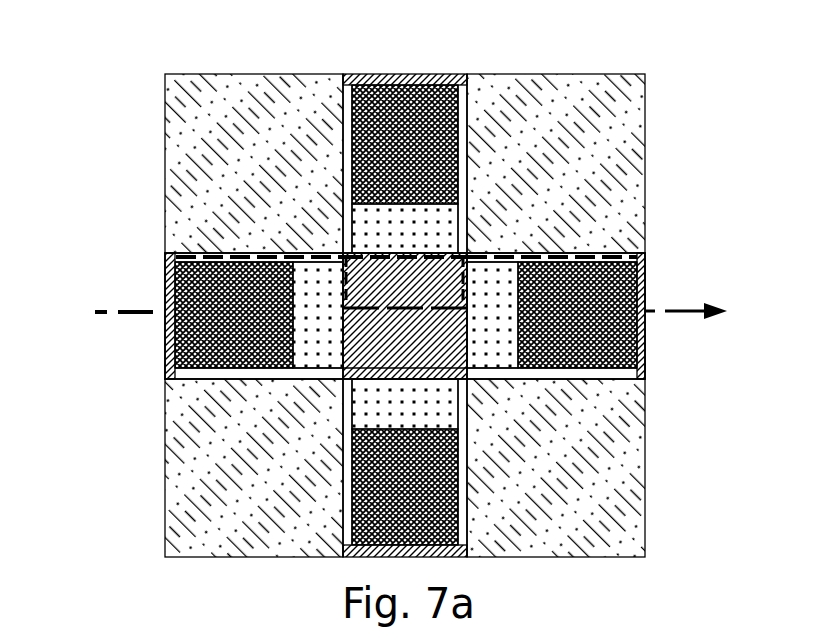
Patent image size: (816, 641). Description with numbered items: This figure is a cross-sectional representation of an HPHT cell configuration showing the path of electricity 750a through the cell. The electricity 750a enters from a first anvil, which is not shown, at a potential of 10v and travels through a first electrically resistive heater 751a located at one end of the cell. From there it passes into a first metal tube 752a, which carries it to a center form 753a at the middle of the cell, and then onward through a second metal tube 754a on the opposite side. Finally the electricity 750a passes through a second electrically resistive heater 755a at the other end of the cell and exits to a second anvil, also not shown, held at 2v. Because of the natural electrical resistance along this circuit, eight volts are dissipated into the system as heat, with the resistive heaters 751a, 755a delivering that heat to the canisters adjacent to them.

The electricity 750a is at (133, 313).
The first electrically resistive heater 751a is at (167, 280).
The first metal tube 752a is at (278, 253).
The center form 753a is at (445, 268).
The second metal tube 754a is at (585, 255).
The second electrically resistive heater 755a is at (645, 355).
The voltage of first anvil 10v is at (62, 314).
The voltage of second anvil 2v is at (708, 309).